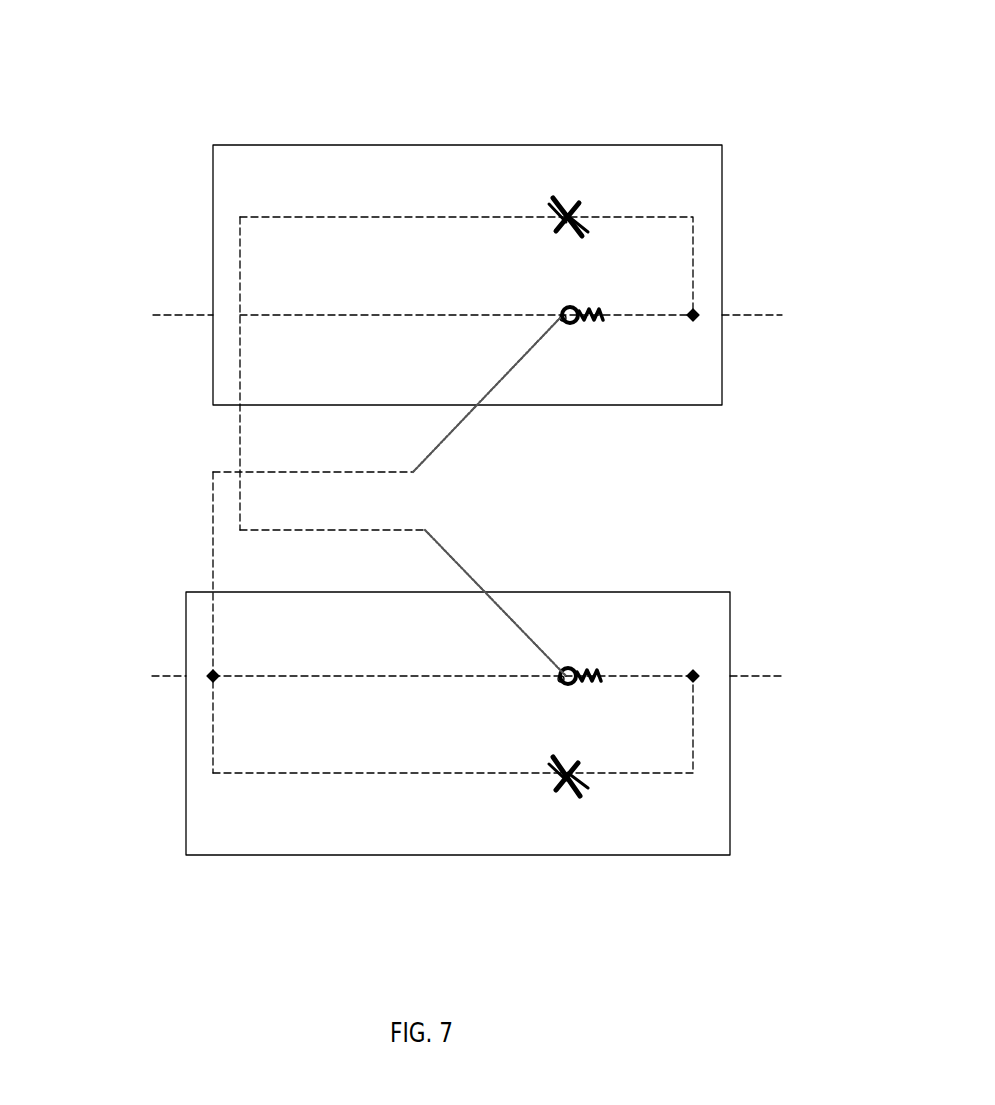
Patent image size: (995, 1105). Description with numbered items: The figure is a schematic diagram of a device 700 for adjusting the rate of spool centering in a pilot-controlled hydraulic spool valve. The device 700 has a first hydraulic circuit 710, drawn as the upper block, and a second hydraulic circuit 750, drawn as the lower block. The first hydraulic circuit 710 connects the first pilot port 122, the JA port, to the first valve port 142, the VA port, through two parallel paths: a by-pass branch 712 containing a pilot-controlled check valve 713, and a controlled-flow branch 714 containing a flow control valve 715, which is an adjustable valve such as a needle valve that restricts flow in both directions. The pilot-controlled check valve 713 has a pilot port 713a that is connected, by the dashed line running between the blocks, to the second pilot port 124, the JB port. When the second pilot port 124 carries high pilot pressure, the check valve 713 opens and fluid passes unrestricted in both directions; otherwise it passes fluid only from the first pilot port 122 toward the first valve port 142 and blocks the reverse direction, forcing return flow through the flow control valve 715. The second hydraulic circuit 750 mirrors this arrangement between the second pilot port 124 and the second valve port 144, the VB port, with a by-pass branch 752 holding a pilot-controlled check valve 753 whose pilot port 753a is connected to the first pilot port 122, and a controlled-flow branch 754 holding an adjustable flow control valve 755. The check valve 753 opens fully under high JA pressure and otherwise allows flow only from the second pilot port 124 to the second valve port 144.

The device 700 is at (140, 74).
The first hydraulic circuit 710 is at (722, 180).
The by-pass branch 712 is at (303, 313).
The pilot-controlled check valve 713 is at (598, 320).
The pilot port 713a is at (560, 322).
The controlled-flow branch 714 is at (277, 216).
The flow control valve 715 is at (578, 213).
The first pilot port 122 is at (176, 322).
The first valve port 142 is at (742, 320).
The second hydraulic circuit 750 is at (730, 840).
The by-pass branch 752 is at (492, 682).
The pilot-controlled check valve 753 is at (596, 682).
The bypass valve connection node 753a is at (562, 668).
The controlled-flow branch 754 is at (270, 770).
The flow control valve 755 is at (574, 780).
The second pilot port 124 is at (159, 668).
The second valve port 144 is at (745, 676).